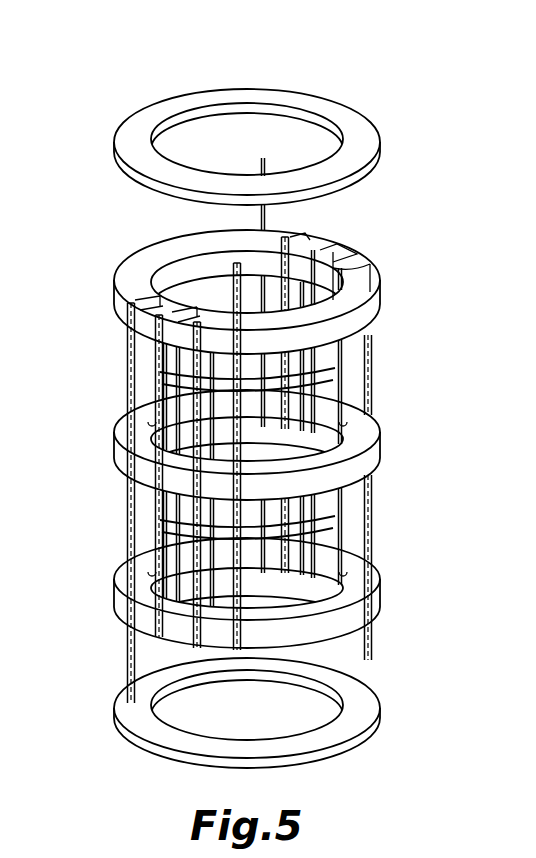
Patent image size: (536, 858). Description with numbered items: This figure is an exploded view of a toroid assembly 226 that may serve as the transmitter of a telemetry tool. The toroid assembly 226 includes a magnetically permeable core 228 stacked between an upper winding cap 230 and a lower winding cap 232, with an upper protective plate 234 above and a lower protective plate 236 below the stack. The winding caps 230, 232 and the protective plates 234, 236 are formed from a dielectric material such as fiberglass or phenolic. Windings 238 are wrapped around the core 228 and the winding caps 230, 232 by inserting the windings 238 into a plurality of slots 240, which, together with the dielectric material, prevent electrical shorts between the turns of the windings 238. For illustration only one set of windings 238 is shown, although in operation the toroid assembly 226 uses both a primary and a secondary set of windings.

The toroid assembly 226 is at (333, 89).
The magnetically permeable core 228 is at (380, 442).
The upper winding cap 230 is at (380, 297).
The lower winding cap 232 is at (378, 590).
The upper protective plate 234 is at (382, 145).
The lower protective plate 236 is at (380, 712).
The windings 238 is at (317, 363).
The slots 240 is at (125, 366).